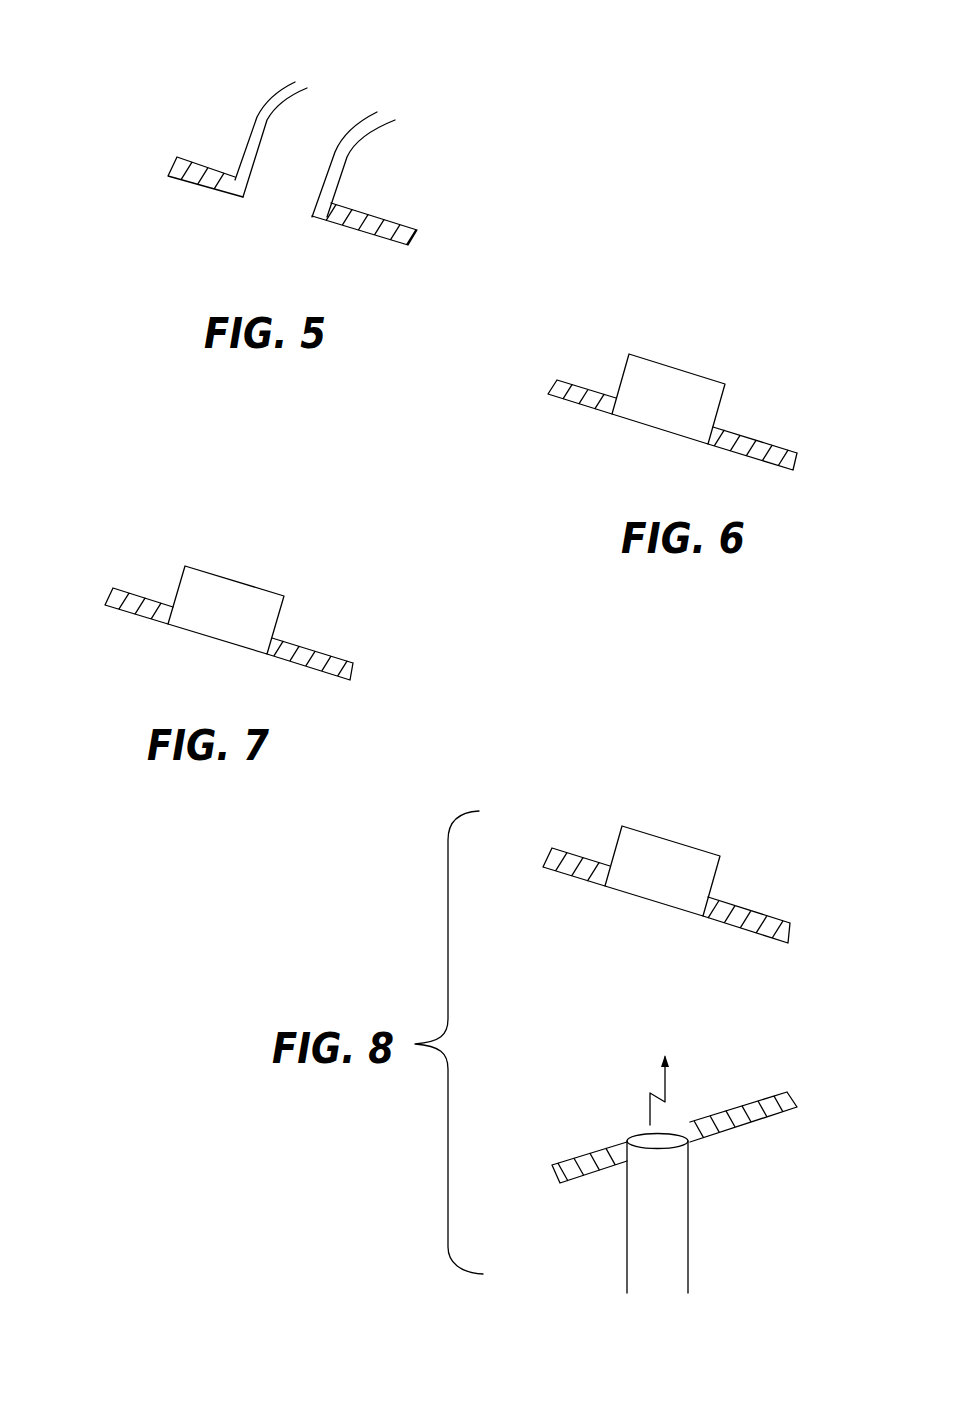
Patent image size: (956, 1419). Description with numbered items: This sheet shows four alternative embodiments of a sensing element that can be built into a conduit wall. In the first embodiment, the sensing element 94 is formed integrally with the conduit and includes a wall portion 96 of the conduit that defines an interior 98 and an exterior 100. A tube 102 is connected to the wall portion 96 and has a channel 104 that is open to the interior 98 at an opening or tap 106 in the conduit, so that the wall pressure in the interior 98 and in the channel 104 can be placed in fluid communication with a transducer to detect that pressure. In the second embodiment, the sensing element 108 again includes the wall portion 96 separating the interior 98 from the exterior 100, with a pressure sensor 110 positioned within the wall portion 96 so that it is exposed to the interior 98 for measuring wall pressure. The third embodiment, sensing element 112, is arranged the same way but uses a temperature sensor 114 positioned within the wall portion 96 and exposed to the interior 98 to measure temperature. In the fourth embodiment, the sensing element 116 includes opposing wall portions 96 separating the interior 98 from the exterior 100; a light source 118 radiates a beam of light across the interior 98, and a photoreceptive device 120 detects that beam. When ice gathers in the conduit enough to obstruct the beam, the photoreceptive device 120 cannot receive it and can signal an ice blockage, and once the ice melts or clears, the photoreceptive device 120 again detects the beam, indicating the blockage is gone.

In FIG. 5, the sensing element 94 is at (117, 117).
In FIG. 5, the wall portion 96 is at (210, 167).
In FIG. 6, the wall portion 96 is at (578, 383).
In FIG. 7, the wall portion 96 is at (137, 593).
In FIG. 8, the wall portion 96 is at (577, 853).
In FIG. 5, the interior 98 is at (319, 273).
In FIG. 6, the interior 98 is at (662, 473).
In FIG. 7, the interior 98 is at (221, 685).
In FIG. 8, the interior 98 is at (593, 993).
In FIG. 5, the exterior 100 is at (418, 167).
In FIG. 6, the exterior 100 is at (794, 358).
In FIG. 7, the exterior 100 is at (357, 565).
In FIG. 8, the exterior 100 is at (782, 1028).
In FIG. 5, the tube 102 is at (270, 100).
In FIG. 5, the channel 104 is at (298, 138).
In FIG. 5, the opening or tap 106 is at (268, 217).
In FIG. 6, the sensing element 108 is at (567, 467).
In FIG. 6, the pressure sensor 110 is at (678, 367).
In FIG. 7, the sensing element 112 is at (123, 682).
In FIG. 7, the temperature sensor 114 is at (239, 580).
In FIG. 8, the sensing element 116 is at (667, 742).
In FIG. 8, the light source 118 is at (627, 1222).
In FIG. 8, the photoreceptive device 120 is at (663, 833).